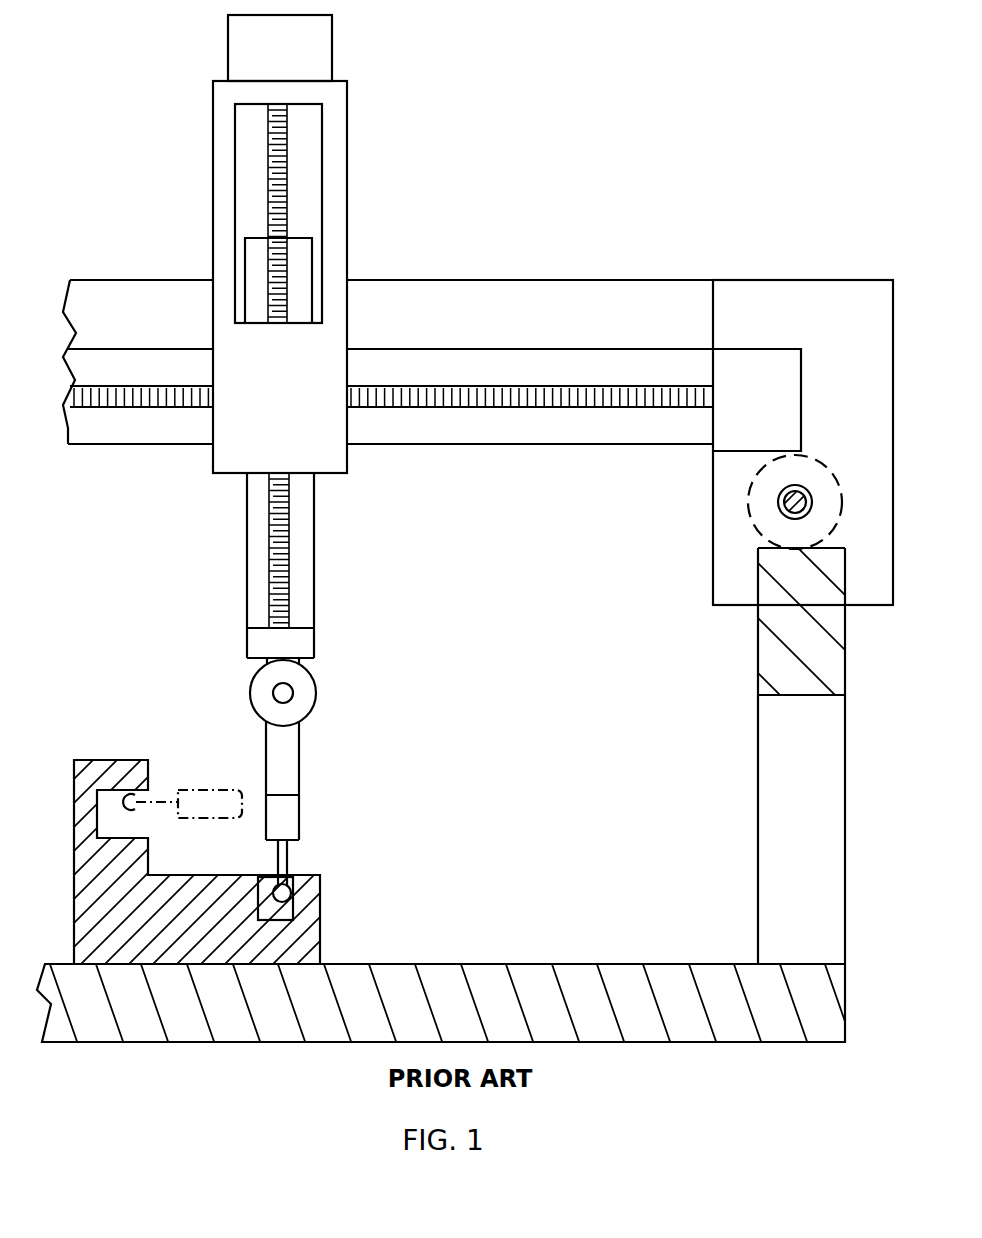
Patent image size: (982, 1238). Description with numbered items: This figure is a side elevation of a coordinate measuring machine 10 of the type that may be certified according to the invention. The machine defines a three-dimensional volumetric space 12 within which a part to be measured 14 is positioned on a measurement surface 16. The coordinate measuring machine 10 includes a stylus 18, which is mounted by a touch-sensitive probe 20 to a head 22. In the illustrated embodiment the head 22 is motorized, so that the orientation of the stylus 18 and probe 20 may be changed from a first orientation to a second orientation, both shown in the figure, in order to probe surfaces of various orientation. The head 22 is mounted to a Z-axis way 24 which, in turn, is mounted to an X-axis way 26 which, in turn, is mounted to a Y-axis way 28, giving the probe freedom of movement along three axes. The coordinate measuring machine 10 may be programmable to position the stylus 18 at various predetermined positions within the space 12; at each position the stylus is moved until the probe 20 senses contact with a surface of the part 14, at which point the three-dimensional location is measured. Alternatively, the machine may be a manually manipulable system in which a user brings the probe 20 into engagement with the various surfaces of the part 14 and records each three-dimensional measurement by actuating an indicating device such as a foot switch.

The coordinate measuring machine 10 is at (531, 279).
The three-dimensional volumetric space 12 is at (526, 722).
The part to be measured 14 is at (102, 760).
The measurement surface 16 is at (514, 963).
The stylus 18 is at (293, 858).
The touch-sensitive probe 20 is at (299, 815).
The head 22 is at (315, 682).
The Z-axis way 24 is at (314, 545).
The X-axis way 26 is at (522, 444).
The Y-axis way 28 is at (751, 520).